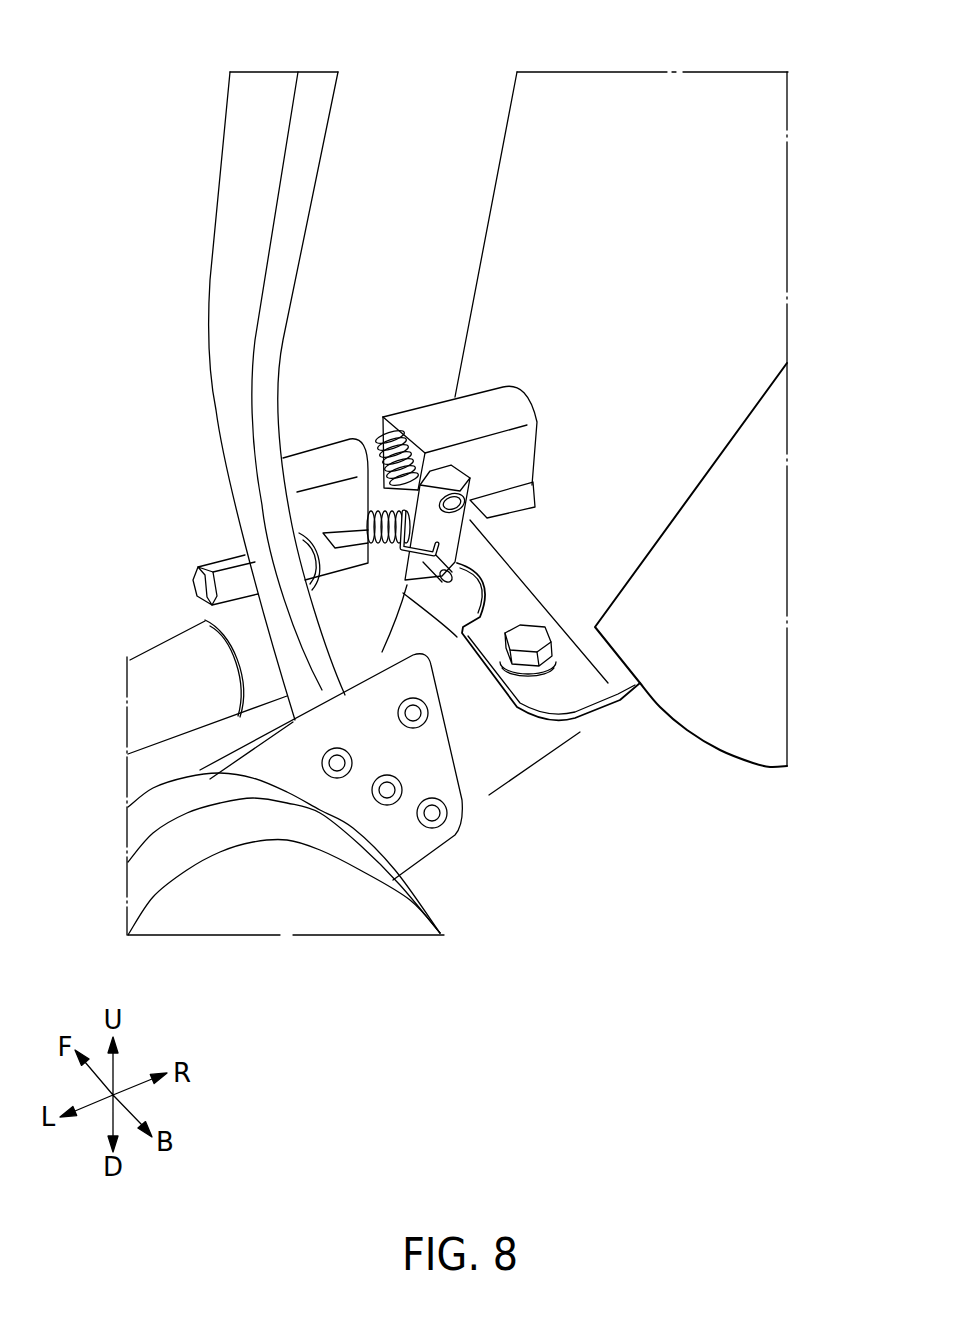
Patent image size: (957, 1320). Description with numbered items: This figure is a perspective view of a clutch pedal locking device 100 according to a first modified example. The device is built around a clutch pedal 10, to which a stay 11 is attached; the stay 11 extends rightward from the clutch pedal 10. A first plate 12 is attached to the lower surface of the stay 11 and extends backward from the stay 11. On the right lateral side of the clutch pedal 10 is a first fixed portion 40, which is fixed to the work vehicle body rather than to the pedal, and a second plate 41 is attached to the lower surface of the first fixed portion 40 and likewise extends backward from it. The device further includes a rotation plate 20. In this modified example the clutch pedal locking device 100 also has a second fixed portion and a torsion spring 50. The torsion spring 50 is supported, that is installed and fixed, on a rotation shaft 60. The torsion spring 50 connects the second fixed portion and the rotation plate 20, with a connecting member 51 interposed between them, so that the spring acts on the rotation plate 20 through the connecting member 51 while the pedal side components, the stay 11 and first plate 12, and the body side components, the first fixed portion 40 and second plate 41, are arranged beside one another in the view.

The clutch pedal 10 is at (288, 622).
The stay 11 is at (322, 463).
The first plate 12 is at (352, 527).
The rotation plate 20 is at (455, 527).
The first fixed portion 40 is at (428, 417).
The second plate 41 is at (508, 498).
The torsion spring 50 is at (386, 442).
The connecting member 51 is at (400, 580).
The rotation shaft 60 is at (466, 468).
The clutch pedal locking device 100 is at (555, 232).